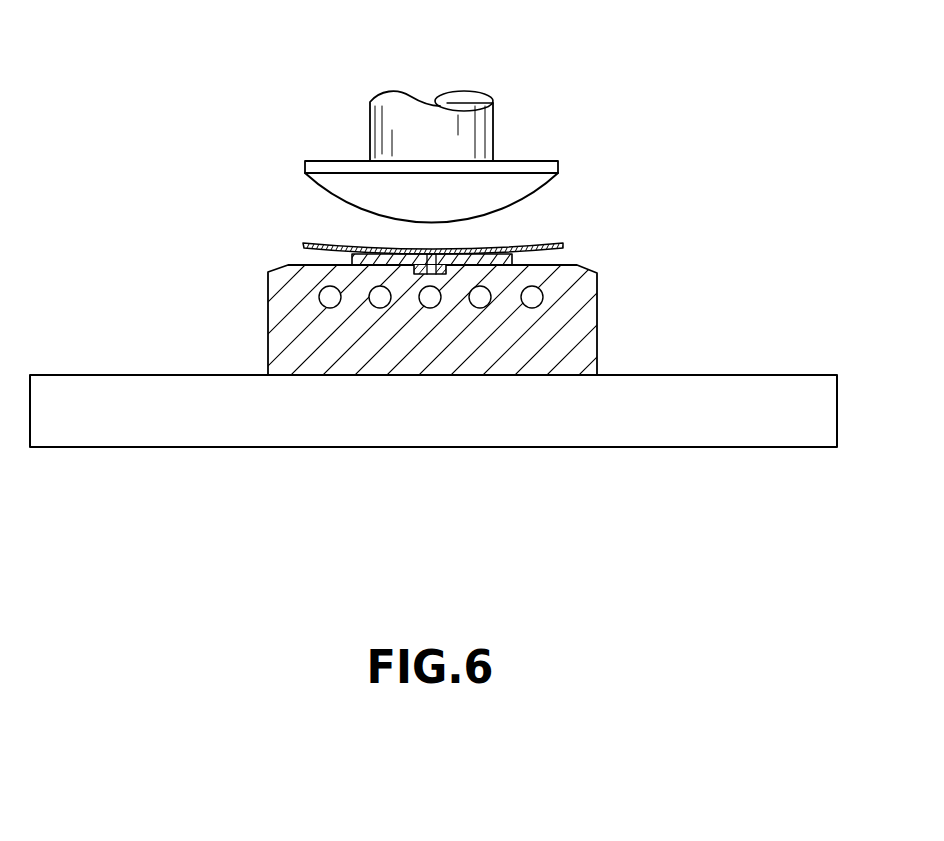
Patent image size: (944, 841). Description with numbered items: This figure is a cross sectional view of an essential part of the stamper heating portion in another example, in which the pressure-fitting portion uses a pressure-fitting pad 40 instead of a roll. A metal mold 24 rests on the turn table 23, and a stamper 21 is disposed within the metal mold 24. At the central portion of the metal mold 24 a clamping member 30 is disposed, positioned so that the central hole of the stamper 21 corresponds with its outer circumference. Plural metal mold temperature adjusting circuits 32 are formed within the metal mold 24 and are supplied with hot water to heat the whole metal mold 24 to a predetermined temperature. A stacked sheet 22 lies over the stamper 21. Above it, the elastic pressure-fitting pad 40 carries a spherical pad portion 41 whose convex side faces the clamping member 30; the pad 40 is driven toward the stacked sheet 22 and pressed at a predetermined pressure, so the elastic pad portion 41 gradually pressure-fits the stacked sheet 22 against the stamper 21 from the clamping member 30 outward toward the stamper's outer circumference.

The pressure-fitting pad 40 is at (437, 130).
The pad portion 41 is at (523, 185).
The stacked sheet 22 is at (318, 243).
The stamper 21 is at (517, 261).
The metal mold 24 is at (268, 295).
The turn table 23 is at (764, 388).
The metal mold temperature adjusting circuits 32 is at (336, 303).
The clamping member 30 is at (447, 272).